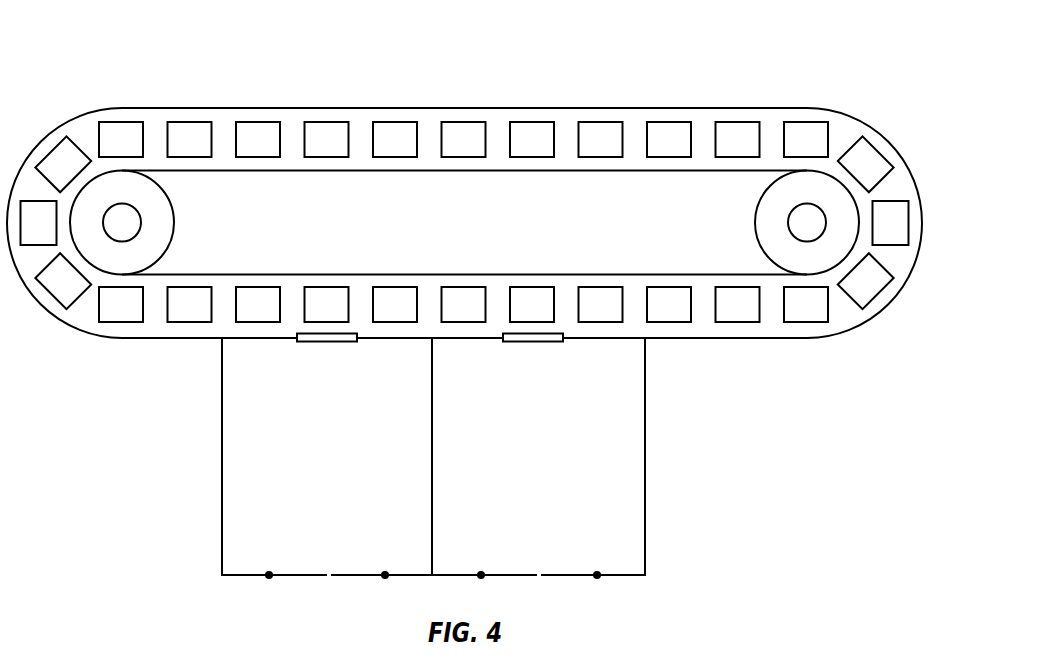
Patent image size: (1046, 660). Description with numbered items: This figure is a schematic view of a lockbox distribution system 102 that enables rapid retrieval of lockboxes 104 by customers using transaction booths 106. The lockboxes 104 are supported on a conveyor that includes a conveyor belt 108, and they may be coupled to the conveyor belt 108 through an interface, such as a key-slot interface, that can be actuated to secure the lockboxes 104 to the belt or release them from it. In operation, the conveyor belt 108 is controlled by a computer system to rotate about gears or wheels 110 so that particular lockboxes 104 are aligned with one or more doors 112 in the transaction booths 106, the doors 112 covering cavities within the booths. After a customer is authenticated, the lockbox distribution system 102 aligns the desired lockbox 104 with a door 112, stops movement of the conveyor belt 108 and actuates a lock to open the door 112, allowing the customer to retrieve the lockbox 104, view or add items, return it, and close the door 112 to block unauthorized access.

The lockbox distribution system 102 is at (837, 33).
The lockboxes 104 is at (190, 122).
The transaction booths 106 is at (222, 452).
The conveyor belt 108 is at (475, 107).
The gears or wheels 110 is at (175, 221).
The doors 112 is at (325, 342).